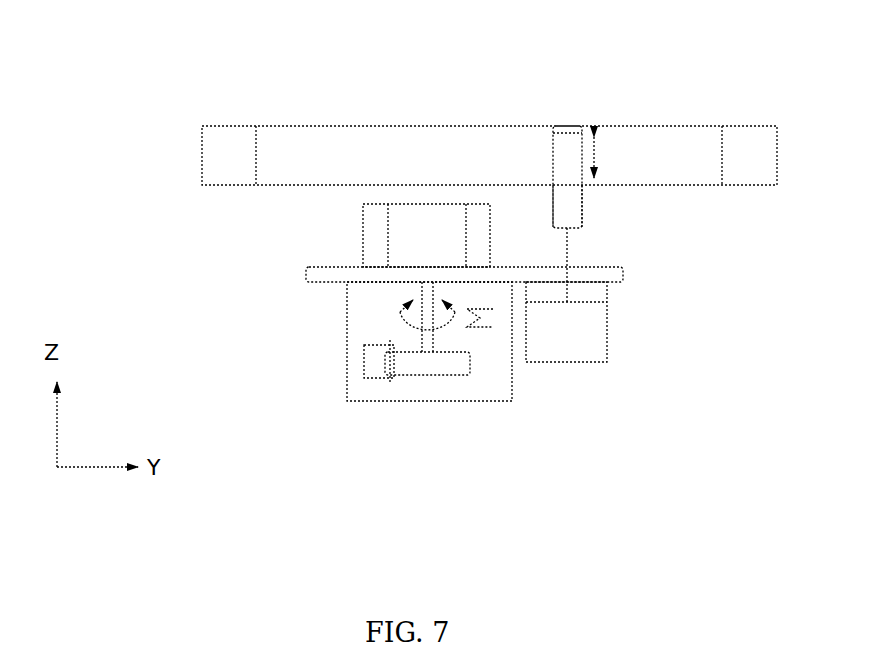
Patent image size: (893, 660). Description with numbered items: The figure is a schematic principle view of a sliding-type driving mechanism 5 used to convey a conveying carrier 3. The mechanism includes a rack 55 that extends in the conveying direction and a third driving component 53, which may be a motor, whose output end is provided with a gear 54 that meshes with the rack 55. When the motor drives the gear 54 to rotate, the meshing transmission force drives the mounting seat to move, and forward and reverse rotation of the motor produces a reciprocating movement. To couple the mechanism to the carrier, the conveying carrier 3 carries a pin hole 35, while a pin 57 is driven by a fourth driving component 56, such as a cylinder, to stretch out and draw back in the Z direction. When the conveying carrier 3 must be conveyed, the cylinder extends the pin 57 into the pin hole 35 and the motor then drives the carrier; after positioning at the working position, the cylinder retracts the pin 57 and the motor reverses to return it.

The conveying carrier 3 is at (489, 103).
The pin hole 35 is at (545, 114).
The pin 57 is at (654, 266).
The third driving component 53 is at (346, 254).
The sliding-type driving mechanism 5 is at (492, 411).
The gear 54 is at (387, 420).
The rack 55 is at (298, 392).
The fourth driving component 56 is at (636, 381).